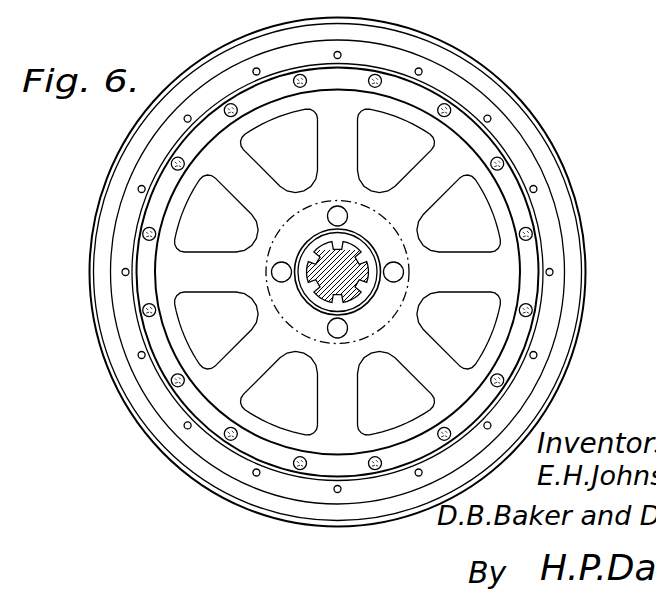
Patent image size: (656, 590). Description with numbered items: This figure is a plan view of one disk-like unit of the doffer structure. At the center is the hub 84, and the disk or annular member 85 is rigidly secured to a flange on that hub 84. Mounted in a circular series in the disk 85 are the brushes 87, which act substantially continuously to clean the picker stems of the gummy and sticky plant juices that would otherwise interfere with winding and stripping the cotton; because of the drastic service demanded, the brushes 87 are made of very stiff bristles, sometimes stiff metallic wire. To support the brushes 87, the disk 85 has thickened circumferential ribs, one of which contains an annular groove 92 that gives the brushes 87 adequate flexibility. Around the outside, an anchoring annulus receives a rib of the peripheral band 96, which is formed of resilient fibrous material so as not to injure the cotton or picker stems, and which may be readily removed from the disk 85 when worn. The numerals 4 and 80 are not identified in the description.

The wheel rim 4 is at (98, 198).
The rim flange 96 is at (92, 245).
The spoke disc 85 is at (172, 283).
The clamping ring 92 is at (155, 331).
The bolts 87 is at (527, 233).
The hub axle 80 is at (323, 261).
The hub flange 84 is at (313, 303).